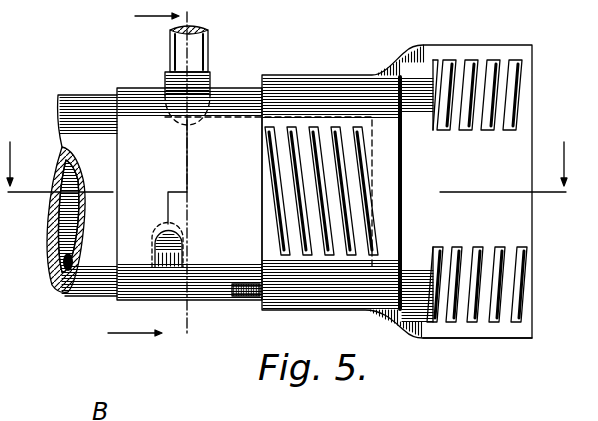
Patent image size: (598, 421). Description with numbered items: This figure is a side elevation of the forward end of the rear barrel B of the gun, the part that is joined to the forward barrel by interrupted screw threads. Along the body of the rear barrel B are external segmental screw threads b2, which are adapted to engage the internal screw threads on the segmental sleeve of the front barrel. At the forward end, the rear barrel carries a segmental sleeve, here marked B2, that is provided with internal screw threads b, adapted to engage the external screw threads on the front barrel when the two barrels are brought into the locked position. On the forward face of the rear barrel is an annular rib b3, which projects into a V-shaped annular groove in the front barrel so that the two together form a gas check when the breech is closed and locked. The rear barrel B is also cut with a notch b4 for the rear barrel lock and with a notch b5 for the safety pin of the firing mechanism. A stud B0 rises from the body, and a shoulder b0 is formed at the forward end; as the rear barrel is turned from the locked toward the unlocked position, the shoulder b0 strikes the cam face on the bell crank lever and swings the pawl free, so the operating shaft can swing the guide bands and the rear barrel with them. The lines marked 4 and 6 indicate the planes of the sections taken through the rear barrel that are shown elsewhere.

The rear barrel B is at (70, 95).
The nipple B0 is at (208, 40).
The cap nut B2 is at (532, 135).
The internal screw thread b is at (532, 88).
The external segmental screw threads b2 is at (550, 263).
The annular rib b3 is at (405, 172).
The notch b4 is at (247, 298).
The notch b5 is at (182, 244).
The shoulder b0 is at (498, 328).
The section line 4- 4 is at (295, 190).
The section line 6- 6 is at (152, 178).